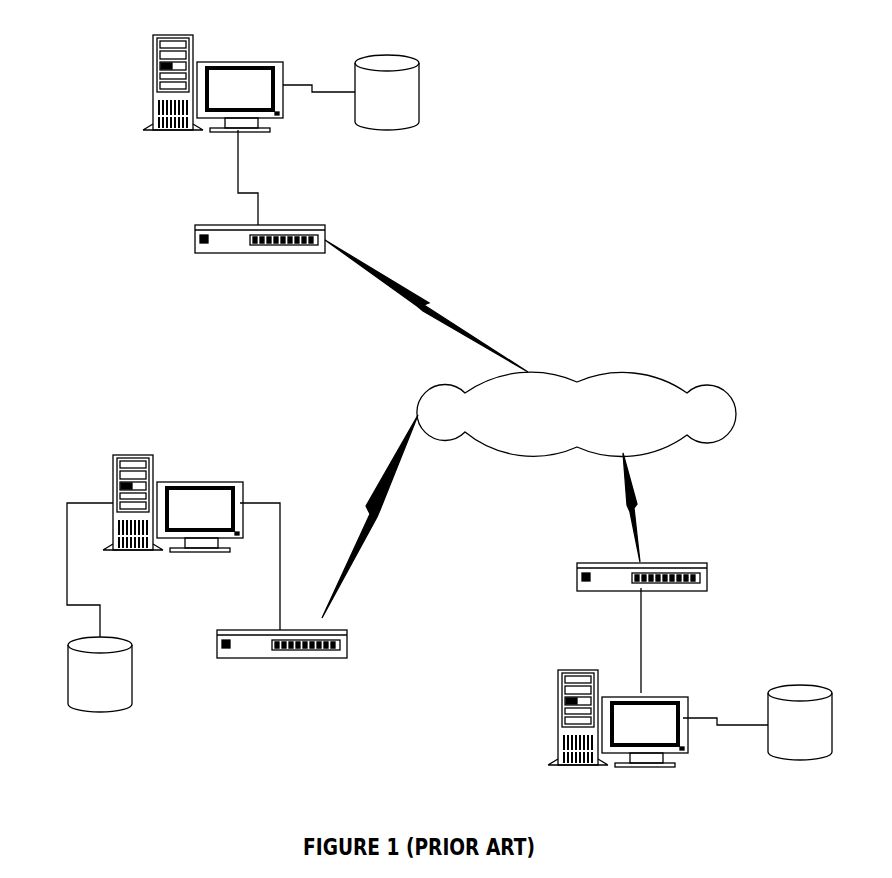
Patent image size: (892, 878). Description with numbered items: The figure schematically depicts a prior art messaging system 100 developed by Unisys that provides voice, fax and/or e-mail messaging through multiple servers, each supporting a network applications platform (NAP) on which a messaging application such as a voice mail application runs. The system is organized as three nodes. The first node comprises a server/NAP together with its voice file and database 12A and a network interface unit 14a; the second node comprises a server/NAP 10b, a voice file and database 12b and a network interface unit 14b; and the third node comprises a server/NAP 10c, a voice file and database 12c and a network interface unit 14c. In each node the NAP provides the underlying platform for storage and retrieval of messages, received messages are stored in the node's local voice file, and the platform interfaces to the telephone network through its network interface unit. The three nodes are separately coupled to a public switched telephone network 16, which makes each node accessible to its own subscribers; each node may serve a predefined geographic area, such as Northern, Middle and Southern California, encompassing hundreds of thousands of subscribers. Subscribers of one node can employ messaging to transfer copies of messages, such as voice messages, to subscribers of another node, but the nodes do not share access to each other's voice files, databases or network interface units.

The server / network applications platform 100 is at (229, 41).
The voice file and database 12A is at (387, 53).
The network interface unit 14a is at (312, 225).
The public switched telephone network 16 is at (657, 373).
The server/NAP 10b is at (183, 459).
The voice file and database 12b is at (133, 668).
The network interface unit 14b is at (347, 633).
The network interface unit 14c is at (575, 575).
The server/NAP 10c is at (541, 677).
The voice file and database 12c is at (800, 685).